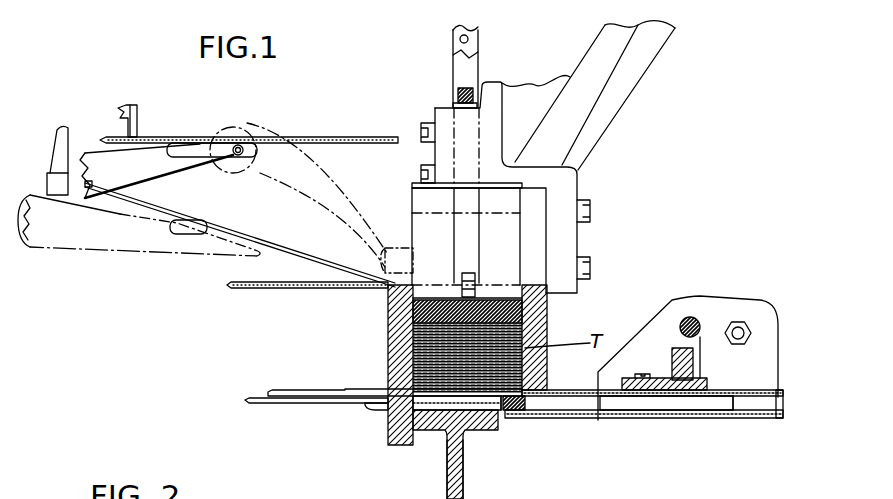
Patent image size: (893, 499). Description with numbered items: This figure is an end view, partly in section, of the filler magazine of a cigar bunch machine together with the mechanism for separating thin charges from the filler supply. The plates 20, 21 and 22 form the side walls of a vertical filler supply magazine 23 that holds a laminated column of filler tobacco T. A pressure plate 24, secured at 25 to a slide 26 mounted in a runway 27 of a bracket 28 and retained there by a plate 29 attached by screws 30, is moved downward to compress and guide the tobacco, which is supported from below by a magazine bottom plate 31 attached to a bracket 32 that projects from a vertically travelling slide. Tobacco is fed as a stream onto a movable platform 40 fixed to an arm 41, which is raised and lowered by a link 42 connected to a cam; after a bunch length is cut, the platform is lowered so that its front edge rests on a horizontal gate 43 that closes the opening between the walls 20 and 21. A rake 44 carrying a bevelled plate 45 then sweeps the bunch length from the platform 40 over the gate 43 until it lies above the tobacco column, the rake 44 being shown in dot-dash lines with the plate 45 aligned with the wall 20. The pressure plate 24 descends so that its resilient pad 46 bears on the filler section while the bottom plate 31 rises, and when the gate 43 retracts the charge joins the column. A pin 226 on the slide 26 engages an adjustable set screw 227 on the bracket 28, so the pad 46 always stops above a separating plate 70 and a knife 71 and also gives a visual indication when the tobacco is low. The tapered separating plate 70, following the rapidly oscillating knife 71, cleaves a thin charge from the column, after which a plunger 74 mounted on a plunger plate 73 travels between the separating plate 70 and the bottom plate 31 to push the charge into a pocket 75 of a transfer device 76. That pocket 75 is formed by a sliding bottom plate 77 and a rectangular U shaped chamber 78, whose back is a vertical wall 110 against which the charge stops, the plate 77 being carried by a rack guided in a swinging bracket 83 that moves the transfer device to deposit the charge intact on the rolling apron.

The plate 20 is at (392, 334).
The plate 21 is at (543, 320).
The plate 22 is at (388, 428).
The filler supply magazine 23 is at (503, 268).
The pressure plate 24 is at (425, 285).
The securing point 25 is at (467, 273).
The slide 26 is at (462, 80).
The runway 27 is at (480, 127).
The bracket 28 is at (638, 98).
The plate 29 is at (437, 110).
The screws 30 is at (420, 127).
The bottom plate 31 is at (515, 413).
The bracket 32 is at (463, 455).
The movable platform 40 is at (292, 135).
The arm 41 is at (205, 163).
The link 42 is at (58, 134).
The gate 43 is at (262, 289).
The rake 44 is at (337, 182).
The plate 45 is at (140, 118).
The resilient pad 46 is at (413, 312).
The separating plate 70 is at (320, 389).
The knife 71 is at (508, 411).
The plunger plate 73 is at (285, 403).
The plunger 74 is at (366, 403).
The pocket 75 is at (615, 404).
The transfer device 76 is at (707, 333).
The sliding bottom plate 77 is at (577, 418).
The rectangular U shaped chamber 78 is at (717, 388).
The swinging bracket 83 is at (670, 360).
The vertical wall 110 is at (727, 400).
The pin 226 is at (469, 40).
The set screw 227 is at (459, 90).